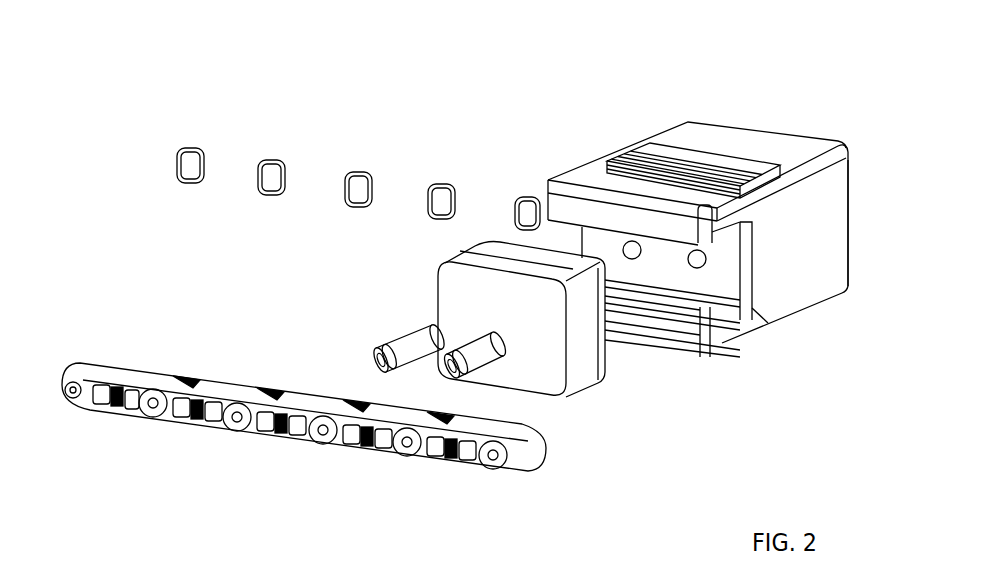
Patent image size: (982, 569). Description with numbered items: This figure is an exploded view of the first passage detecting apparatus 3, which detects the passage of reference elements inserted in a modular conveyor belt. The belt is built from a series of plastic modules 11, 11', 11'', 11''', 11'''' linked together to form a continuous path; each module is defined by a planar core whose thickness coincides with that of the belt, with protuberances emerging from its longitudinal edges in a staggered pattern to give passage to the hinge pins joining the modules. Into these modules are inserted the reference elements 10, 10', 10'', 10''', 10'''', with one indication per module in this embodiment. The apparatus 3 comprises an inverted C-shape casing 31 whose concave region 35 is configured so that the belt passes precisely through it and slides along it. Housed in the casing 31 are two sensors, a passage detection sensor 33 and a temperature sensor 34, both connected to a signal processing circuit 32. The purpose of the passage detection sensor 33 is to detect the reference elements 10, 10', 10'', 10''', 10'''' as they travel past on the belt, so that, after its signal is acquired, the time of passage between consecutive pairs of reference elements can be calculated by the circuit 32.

The passage detecting apparatus 3 is at (818, 82).
The reference element 10 is at (541, 185).
The reference element 10' is at (454, 175).
The reference element 10'' is at (386, 166).
The reference element 10''' is at (306, 154).
The reference element 10'''' is at (230, 135).
The plastic module 11 is at (304, 460).
The plastic module 11' is at (386, 478).
The plastic module 11'' is at (301, 466).
The plastic module 11''' is at (205, 450).
The plastic module 11'''' is at (129, 446).
The casing 31 is at (787, 297).
The signal processing circuit 32 is at (495, 247).
The passage detection sensor 33 is at (410, 338).
The temperature sensor 34 is at (477, 362).
The concave region 35 is at (723, 340).